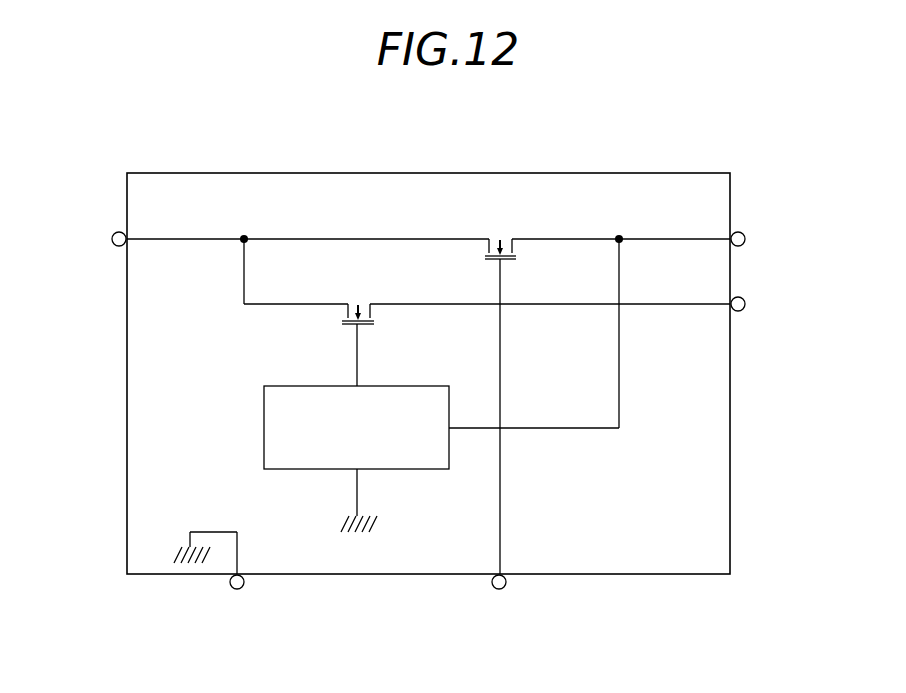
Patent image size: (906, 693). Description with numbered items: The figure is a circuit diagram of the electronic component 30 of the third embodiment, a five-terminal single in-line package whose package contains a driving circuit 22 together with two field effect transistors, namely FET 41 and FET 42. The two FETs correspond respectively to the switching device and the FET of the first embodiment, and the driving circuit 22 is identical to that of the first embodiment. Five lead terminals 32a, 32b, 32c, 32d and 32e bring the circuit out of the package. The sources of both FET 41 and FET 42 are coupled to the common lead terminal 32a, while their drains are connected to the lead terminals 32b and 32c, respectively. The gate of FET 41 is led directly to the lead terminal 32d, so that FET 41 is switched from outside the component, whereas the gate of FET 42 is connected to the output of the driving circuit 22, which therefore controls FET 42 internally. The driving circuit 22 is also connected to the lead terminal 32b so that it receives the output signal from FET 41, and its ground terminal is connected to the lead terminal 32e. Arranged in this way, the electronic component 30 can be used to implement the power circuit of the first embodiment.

The electronic component 30 is at (608, 115).
The lead terminal 32a is at (114, 234).
The lead terminal 32b is at (743, 234).
The lead terminal 32c is at (743, 299).
The lead terminal 32d is at (500, 589).
The lead terminal 32e is at (238, 589).
The FET 41 is at (514, 246).
The FET 42 is at (373, 311).
The driving circuit 22 is at (264, 430).